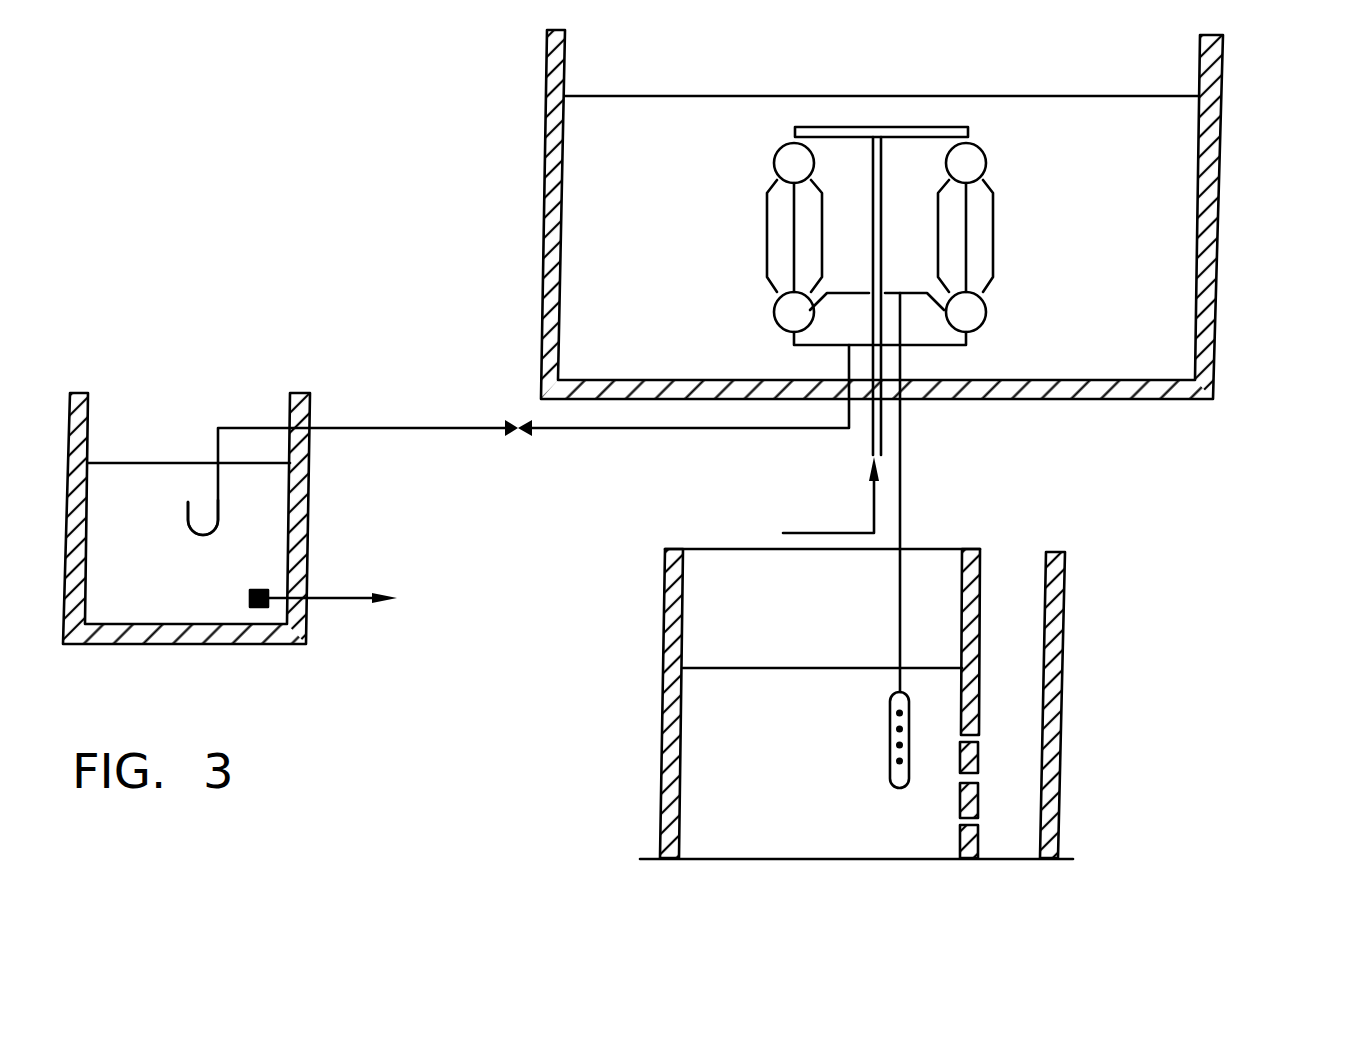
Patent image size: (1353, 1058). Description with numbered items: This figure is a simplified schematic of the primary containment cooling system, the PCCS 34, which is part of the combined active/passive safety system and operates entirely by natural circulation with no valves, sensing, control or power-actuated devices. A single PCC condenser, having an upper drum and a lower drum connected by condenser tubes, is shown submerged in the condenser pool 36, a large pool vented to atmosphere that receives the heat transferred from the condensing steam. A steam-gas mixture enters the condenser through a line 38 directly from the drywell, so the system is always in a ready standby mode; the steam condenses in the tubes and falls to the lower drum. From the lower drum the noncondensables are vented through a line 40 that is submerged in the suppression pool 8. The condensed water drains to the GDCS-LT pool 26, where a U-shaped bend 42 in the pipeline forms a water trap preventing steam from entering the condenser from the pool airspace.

The suppression pool 8 is at (659, 726).
The GDCS-LT pool 26 is at (312, 545).
The PCCS 34 is at (1002, 222).
The condenser pool 36 is at (1223, 229).
The line 38 is at (884, 421).
The line 40 is at (903, 498).
The U-shaped bend 42 is at (213, 537).